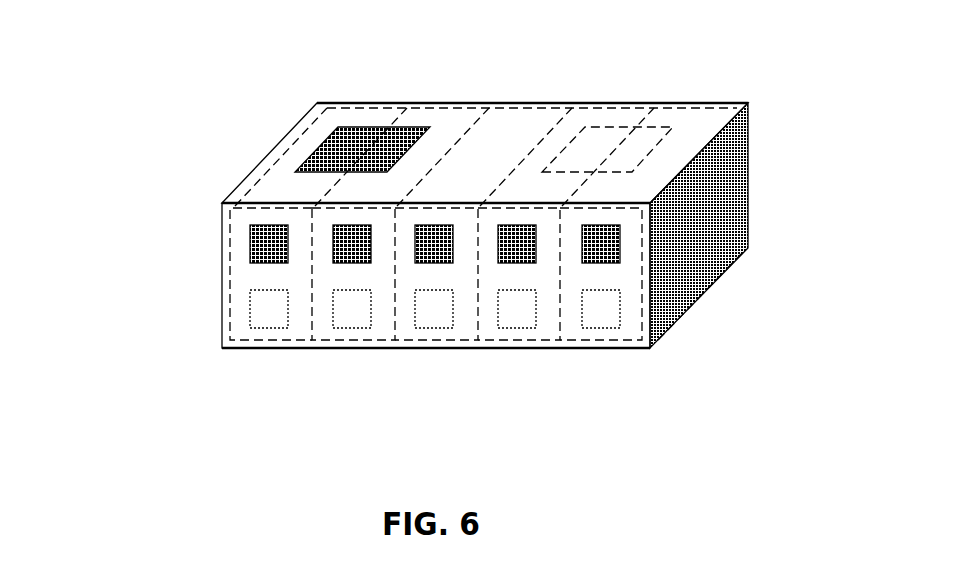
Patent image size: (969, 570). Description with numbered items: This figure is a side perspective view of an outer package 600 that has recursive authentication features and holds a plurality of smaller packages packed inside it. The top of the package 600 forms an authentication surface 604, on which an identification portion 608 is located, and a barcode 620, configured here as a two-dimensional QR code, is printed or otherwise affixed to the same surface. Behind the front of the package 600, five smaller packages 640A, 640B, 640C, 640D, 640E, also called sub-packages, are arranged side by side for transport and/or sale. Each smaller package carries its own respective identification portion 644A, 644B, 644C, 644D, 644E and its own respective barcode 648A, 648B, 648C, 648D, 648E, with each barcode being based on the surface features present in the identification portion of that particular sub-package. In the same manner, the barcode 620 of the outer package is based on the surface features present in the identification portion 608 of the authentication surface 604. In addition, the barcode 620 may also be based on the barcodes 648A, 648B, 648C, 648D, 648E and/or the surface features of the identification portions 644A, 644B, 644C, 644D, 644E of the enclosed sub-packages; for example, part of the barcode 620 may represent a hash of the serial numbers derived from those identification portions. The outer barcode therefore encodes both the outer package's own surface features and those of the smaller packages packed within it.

The package 600 is at (172, 212).
The authentication surface 604 is at (455, 137).
The identification portion 608 is at (603, 133).
The barcode 620 is at (322, 143).
The smaller package 640A is at (230, 282).
The smaller package 640B is at (357, 342).
The smaller package 640C is at (465, 340).
The smaller package 640D is at (503, 340).
The smaller package 640E is at (642, 322).
The identification portion 644A is at (250, 315).
The identification portion 644B is at (337, 327).
The identification portion 644C is at (438, 328).
The identification portion 644D is at (537, 327).
The identification portion 644E is at (620, 295).
The barcode 648A is at (250, 243).
The barcode 648B is at (333, 262).
The barcode 648C is at (415, 262).
The barcode 648D is at (537, 262).
The barcode 648E is at (620, 248).